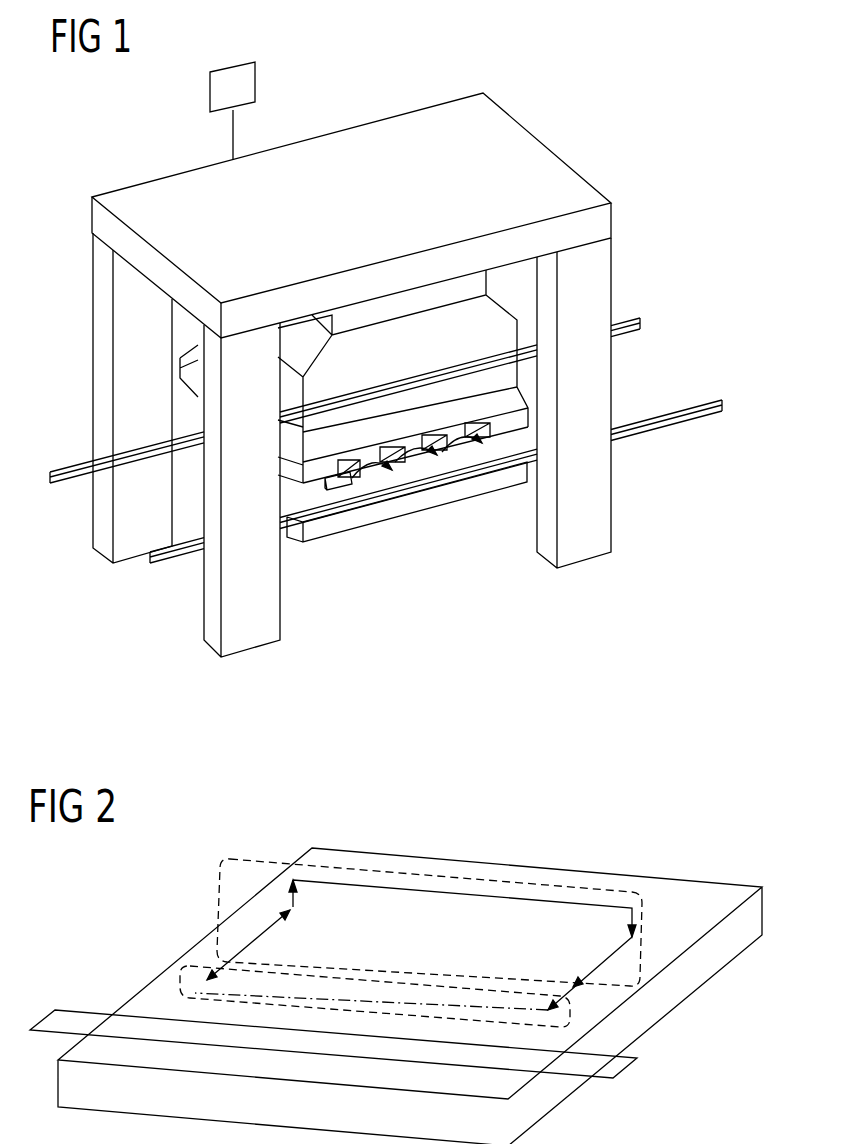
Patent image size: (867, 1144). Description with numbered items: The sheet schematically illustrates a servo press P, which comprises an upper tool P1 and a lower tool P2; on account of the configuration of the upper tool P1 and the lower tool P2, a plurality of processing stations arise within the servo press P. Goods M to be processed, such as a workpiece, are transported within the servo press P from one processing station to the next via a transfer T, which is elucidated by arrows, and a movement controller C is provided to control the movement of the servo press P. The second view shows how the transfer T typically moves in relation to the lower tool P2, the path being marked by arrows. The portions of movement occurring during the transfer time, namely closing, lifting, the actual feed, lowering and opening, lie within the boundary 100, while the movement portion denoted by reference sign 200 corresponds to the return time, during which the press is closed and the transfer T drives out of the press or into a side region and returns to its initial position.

In FIG. 1, the movement controller C is at (256, 82).
In FIG. 1, the servo press P is at (573, 167).
In FIG. 1, the upper tool P1 is at (512, 422).
In FIG. 1, the lower tool P2 is at (383, 525).
In FIG. 2, the lower tool P2 is at (708, 880).
In FIG. 1, the transfer T is at (122, 462).
In FIG. 2, the transfer T is at (70, 1018).
In FIG. 1, the goods to be processed M is at (338, 492).
In FIG. 2, the boundary 100 is at (260, 860).
In FIG. 2, the movement portion of the return time 200 is at (192, 962).